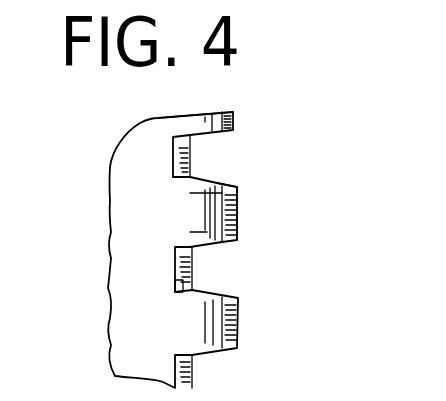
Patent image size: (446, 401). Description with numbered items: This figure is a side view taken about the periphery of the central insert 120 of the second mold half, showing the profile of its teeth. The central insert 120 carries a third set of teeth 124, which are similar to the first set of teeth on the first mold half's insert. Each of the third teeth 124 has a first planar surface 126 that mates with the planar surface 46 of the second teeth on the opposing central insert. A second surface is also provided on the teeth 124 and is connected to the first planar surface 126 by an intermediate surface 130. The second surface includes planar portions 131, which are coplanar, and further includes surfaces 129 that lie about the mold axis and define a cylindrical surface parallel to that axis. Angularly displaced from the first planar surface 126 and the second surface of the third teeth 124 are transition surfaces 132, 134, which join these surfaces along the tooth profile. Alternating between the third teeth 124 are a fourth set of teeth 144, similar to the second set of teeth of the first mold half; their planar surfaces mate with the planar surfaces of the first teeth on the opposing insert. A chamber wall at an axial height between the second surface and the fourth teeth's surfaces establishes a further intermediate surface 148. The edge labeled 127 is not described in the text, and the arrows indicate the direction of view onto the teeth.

The central insert 120 is at (128, 122).
The fourth set of teeth 144 is at (233, 146).
The transition surface 132 is at (215, 183).
The upper edge 127 is at (237, 188).
The planar portion 131 is at (237, 197).
The third set of teeth 124 is at (242, 215).
The intermediate surface 130 is at (239, 229).
The first planar surface 126 is at (226, 243).
The transition surface 134 is at (200, 262).
The intermediate surface 148 is at (222, 243).
The surface 129 is at (207, 232).
The planar surface 46 is at (178, 292).